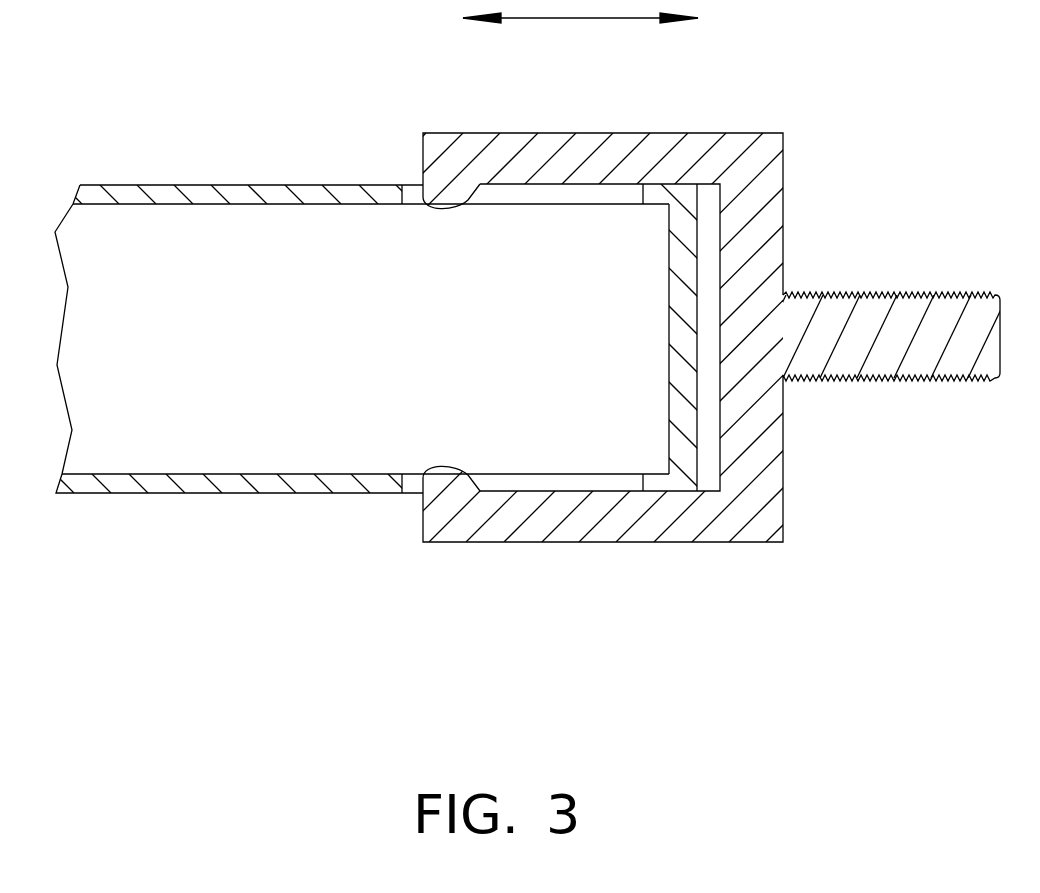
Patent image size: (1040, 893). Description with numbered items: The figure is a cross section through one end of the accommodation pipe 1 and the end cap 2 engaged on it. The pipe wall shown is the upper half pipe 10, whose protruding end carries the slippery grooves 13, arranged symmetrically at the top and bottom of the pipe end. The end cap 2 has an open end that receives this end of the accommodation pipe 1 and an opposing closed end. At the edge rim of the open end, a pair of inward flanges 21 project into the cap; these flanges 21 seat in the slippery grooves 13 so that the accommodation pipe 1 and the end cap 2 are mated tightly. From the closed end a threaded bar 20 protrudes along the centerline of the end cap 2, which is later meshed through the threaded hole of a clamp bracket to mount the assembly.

The accommodation pipe 1 is at (179, 505).
The upper half pipe 10 is at (202, 185).
The slippery groove 13 is at (607, 193).
The end cap 2 is at (686, 555).
The threaded bar 20 is at (933, 293).
The inward flange 21 is at (447, 208).